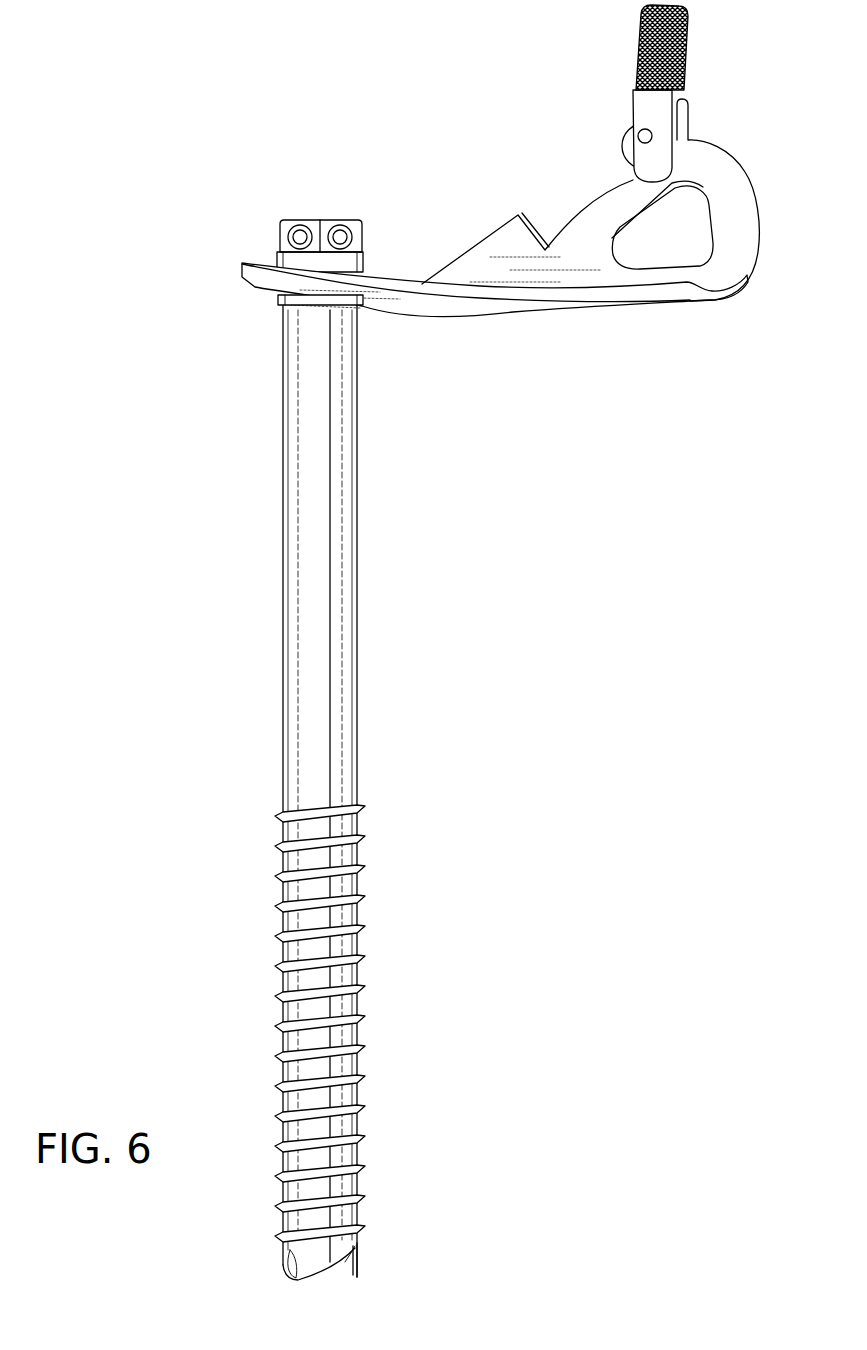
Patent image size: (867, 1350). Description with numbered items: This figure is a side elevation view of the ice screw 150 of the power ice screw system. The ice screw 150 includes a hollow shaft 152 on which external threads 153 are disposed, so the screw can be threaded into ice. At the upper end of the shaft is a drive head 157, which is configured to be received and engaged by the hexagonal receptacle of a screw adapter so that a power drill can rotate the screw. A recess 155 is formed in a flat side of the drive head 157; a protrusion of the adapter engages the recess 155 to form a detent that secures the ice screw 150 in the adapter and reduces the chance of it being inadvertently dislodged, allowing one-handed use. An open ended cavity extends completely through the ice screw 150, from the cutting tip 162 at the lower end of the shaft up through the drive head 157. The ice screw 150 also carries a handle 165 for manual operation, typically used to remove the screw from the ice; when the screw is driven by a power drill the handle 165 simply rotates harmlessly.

The ice screw 150 is at (159, 166).
The hollow shaft 152 is at (357, 557).
The external threads 153 is at (237, 806).
The recess 155 is at (294, 236).
The drive head 157 is at (337, 226).
The cutting tip 162 is at (315, 1277).
The handle 165 is at (563, 277).